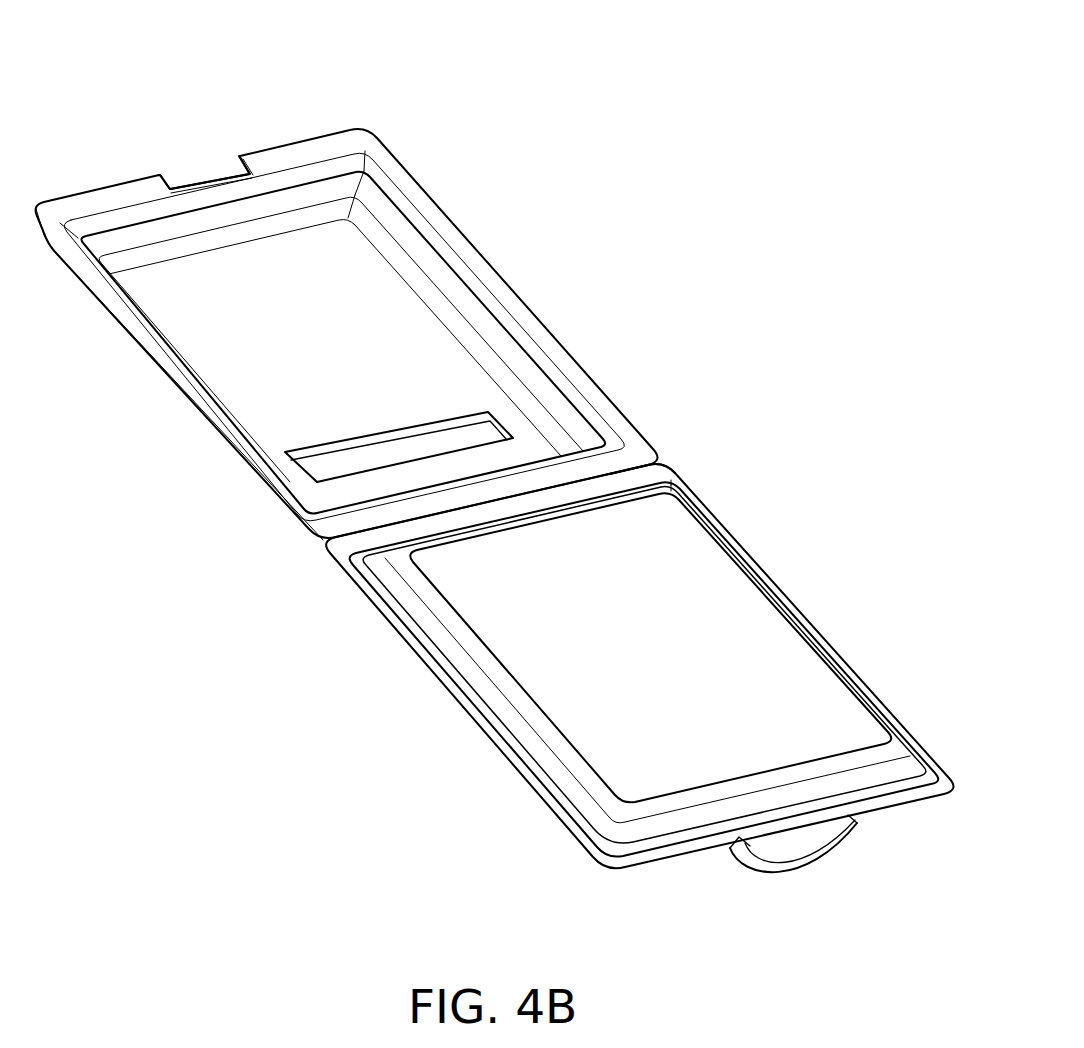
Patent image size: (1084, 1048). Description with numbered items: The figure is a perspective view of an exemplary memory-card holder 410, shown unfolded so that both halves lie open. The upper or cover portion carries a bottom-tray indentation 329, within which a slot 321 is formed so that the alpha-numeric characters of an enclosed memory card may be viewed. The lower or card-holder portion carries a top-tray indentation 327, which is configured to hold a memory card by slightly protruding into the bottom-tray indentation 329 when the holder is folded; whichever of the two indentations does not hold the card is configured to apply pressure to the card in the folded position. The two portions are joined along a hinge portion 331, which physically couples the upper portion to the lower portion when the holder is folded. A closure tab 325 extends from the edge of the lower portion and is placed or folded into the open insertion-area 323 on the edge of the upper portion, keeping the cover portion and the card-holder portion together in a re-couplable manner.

The memory-card holder 410 is at (738, 72).
The slot 321 is at (470, 430).
The open insertion-area 323 is at (207, 176).
The closure tab 325 is at (803, 840).
The top-tray indentation 327 is at (727, 593).
The bottom-tray indentation 329 is at (380, 326).
The hinge portion 331 is at (662, 462).